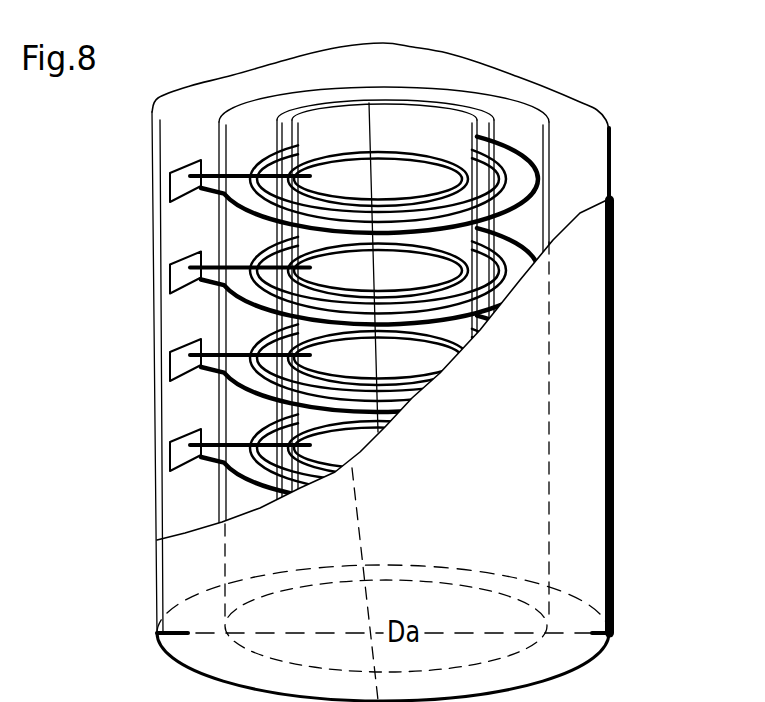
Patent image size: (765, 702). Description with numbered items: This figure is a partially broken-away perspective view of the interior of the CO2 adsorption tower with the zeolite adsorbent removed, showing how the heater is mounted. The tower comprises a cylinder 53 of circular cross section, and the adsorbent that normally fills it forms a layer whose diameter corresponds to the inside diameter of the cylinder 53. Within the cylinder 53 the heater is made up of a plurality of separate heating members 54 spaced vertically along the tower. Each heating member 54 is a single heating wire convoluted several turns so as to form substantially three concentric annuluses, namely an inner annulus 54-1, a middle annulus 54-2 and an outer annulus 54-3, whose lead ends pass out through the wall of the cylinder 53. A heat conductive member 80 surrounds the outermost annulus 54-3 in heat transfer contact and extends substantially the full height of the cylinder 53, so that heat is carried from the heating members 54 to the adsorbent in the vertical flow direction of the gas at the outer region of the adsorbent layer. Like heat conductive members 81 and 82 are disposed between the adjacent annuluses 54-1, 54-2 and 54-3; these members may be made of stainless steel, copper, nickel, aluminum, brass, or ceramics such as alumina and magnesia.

The cylinder 53 is at (617, 370).
The heating member 54 is at (400, 269).
The inner annulus 54-1 is at (444, 108).
The middle annulus 54-2 is at (461, 133).
The outer annulus 54-3 is at (456, 166).
The heat conductive member 80 is at (223, 118).
The heat conductive member 81 is at (296, 118).
The heat conductive member 82 is at (279, 118).